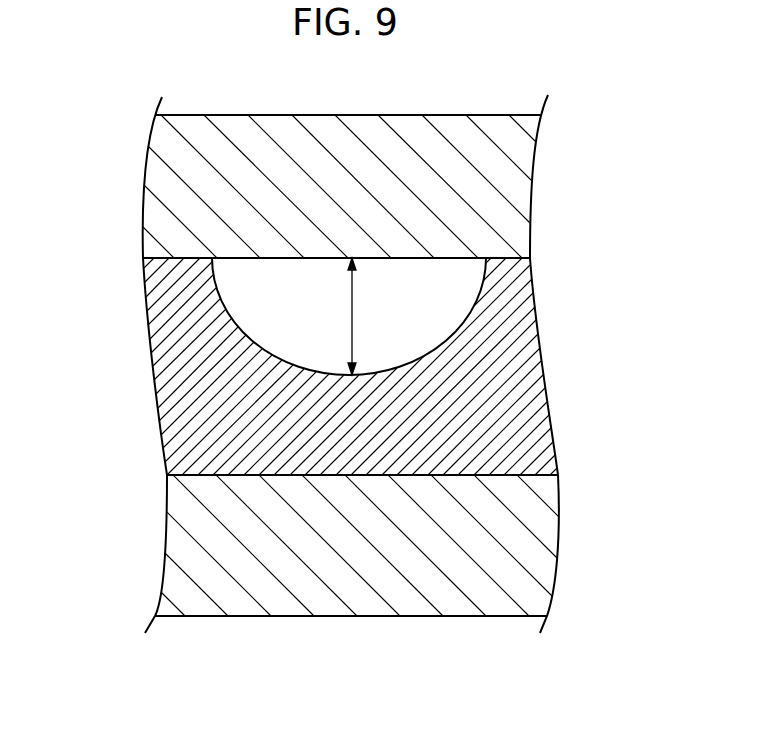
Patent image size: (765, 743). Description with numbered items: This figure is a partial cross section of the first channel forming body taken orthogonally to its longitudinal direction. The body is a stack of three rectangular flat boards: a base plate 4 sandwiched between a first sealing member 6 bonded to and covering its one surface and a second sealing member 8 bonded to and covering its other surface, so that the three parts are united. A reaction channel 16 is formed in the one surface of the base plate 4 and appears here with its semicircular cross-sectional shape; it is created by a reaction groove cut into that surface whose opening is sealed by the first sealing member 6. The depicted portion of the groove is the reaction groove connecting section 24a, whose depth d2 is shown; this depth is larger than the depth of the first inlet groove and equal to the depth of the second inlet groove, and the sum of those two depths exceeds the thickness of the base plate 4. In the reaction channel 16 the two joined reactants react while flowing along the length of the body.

The first sealing member 6 is at (512, 193).
The base plate 4 is at (497, 338).
The second sealing member 8 is at (535, 551).
The reaction channel 16 is at (319, 322).
The reaction groove connecting section 24a is at (403, 360).